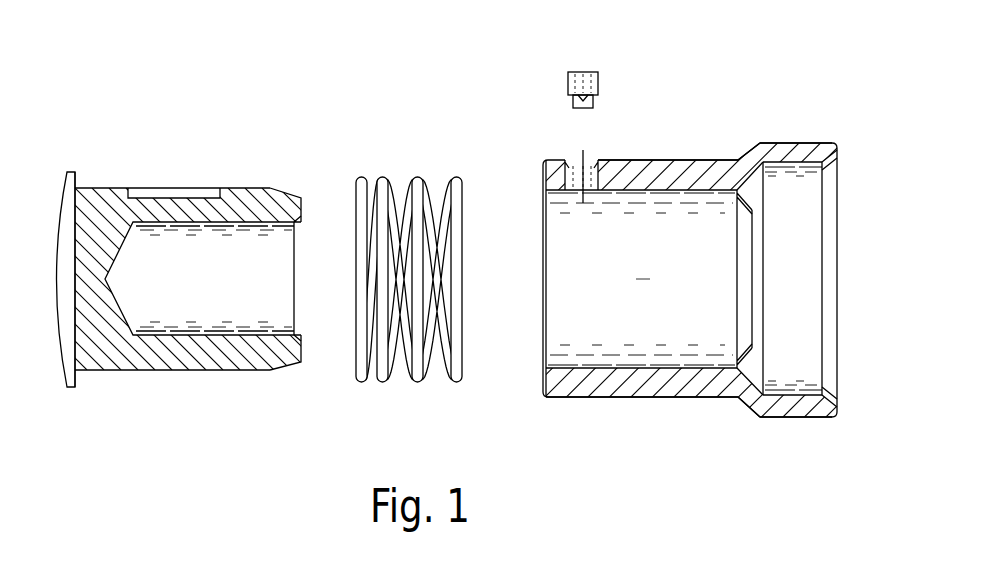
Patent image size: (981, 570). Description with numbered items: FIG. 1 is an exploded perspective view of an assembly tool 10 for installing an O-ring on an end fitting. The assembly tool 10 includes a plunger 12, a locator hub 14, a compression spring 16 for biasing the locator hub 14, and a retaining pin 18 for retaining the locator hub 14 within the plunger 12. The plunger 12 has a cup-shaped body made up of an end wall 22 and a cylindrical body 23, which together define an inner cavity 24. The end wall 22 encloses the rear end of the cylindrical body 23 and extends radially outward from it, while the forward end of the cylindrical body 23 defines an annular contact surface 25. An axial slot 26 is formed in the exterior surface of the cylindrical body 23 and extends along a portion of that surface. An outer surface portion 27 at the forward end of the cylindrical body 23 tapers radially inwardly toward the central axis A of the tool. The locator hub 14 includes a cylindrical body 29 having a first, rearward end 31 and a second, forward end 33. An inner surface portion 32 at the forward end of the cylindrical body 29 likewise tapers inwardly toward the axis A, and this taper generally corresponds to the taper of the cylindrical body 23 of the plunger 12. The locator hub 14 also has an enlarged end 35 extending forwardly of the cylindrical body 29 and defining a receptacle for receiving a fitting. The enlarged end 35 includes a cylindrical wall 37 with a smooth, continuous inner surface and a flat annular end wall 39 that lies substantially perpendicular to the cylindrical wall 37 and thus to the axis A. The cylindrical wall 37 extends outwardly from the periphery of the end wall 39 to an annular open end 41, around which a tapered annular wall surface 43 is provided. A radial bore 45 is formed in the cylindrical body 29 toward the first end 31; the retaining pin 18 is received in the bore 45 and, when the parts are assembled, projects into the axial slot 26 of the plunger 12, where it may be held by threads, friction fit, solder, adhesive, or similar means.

The assembly tool 10 is at (175, 82).
The plunger 12 is at (248, 370).
The locator hub 14 is at (610, 390).
The compression spring 16 is at (417, 177).
The retaining pin 18 is at (568, 83).
The end wall 22 is at (62, 198).
The cylindrical body 23 is at (117, 188).
The inner cavity 24 is at (205, 313).
The annular contact surface 25 is at (302, 200).
The axial slot 26 is at (185, 197).
The outer surface portion 27 is at (282, 363).
The cylindrical body 29 is at (690, 168).
The first end 31 is at (542, 382).
The inner surface portion 32 is at (748, 352).
The second end 33 is at (762, 370).
The enlarged end 35 is at (777, 413).
The cylindrical wall 37 is at (798, 150).
The flat annular end wall 39 is at (765, 178).
The annular open end 41 is at (832, 412).
The tapered annular wall surface 43 is at (830, 170).
The radial bore 45 is at (577, 170).
The central axis A is at (643, 280).